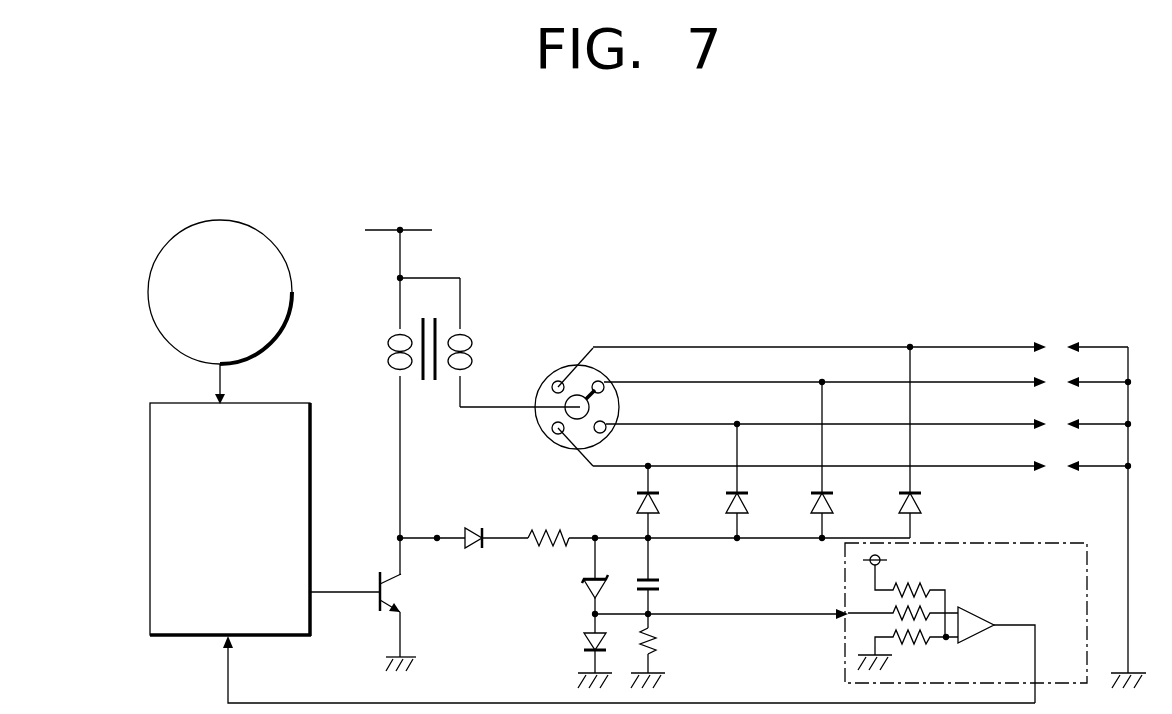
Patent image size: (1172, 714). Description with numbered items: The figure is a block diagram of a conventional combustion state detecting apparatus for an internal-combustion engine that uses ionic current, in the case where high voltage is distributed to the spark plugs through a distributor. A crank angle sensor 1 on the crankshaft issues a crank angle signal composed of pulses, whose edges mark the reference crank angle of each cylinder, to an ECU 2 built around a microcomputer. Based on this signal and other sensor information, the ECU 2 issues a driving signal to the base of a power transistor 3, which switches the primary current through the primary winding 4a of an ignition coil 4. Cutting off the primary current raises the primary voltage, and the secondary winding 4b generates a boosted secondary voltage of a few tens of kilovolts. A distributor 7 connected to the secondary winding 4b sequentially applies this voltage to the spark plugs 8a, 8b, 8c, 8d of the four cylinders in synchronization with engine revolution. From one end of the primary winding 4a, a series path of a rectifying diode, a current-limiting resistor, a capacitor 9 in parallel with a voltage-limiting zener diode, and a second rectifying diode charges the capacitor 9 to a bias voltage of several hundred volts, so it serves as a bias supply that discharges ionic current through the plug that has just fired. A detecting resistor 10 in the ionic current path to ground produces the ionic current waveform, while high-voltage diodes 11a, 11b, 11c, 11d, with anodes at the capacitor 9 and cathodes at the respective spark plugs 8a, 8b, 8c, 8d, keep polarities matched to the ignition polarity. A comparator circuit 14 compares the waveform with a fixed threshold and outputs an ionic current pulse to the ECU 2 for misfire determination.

The crank angle sensor 1 is at (216, 220).
The ECU 2 is at (150, 410).
The power transistor 3 is at (377, 604).
The ignition coil 4 is at (443, 367).
The primary winding 4a is at (388, 348).
The secondary winding 4b is at (474, 338).
The distributor 7 is at (571, 366).
The spark plug 8a is at (1058, 465).
The spark plug 8b is at (1058, 423).
The spark plug 8c is at (1058, 381).
The spark plug 8d is at (1058, 346).
The capacitor 9 is at (662, 584).
The detecting resistor 10 is at (662, 646).
The high-voltage diode 11a is at (637, 502).
The high-voltage diode 11b is at (726, 506).
The high-voltage diode 11c is at (811, 506).
The high-voltage diode 11d is at (899, 506).
The comparator circuit 14 is at (966, 586).